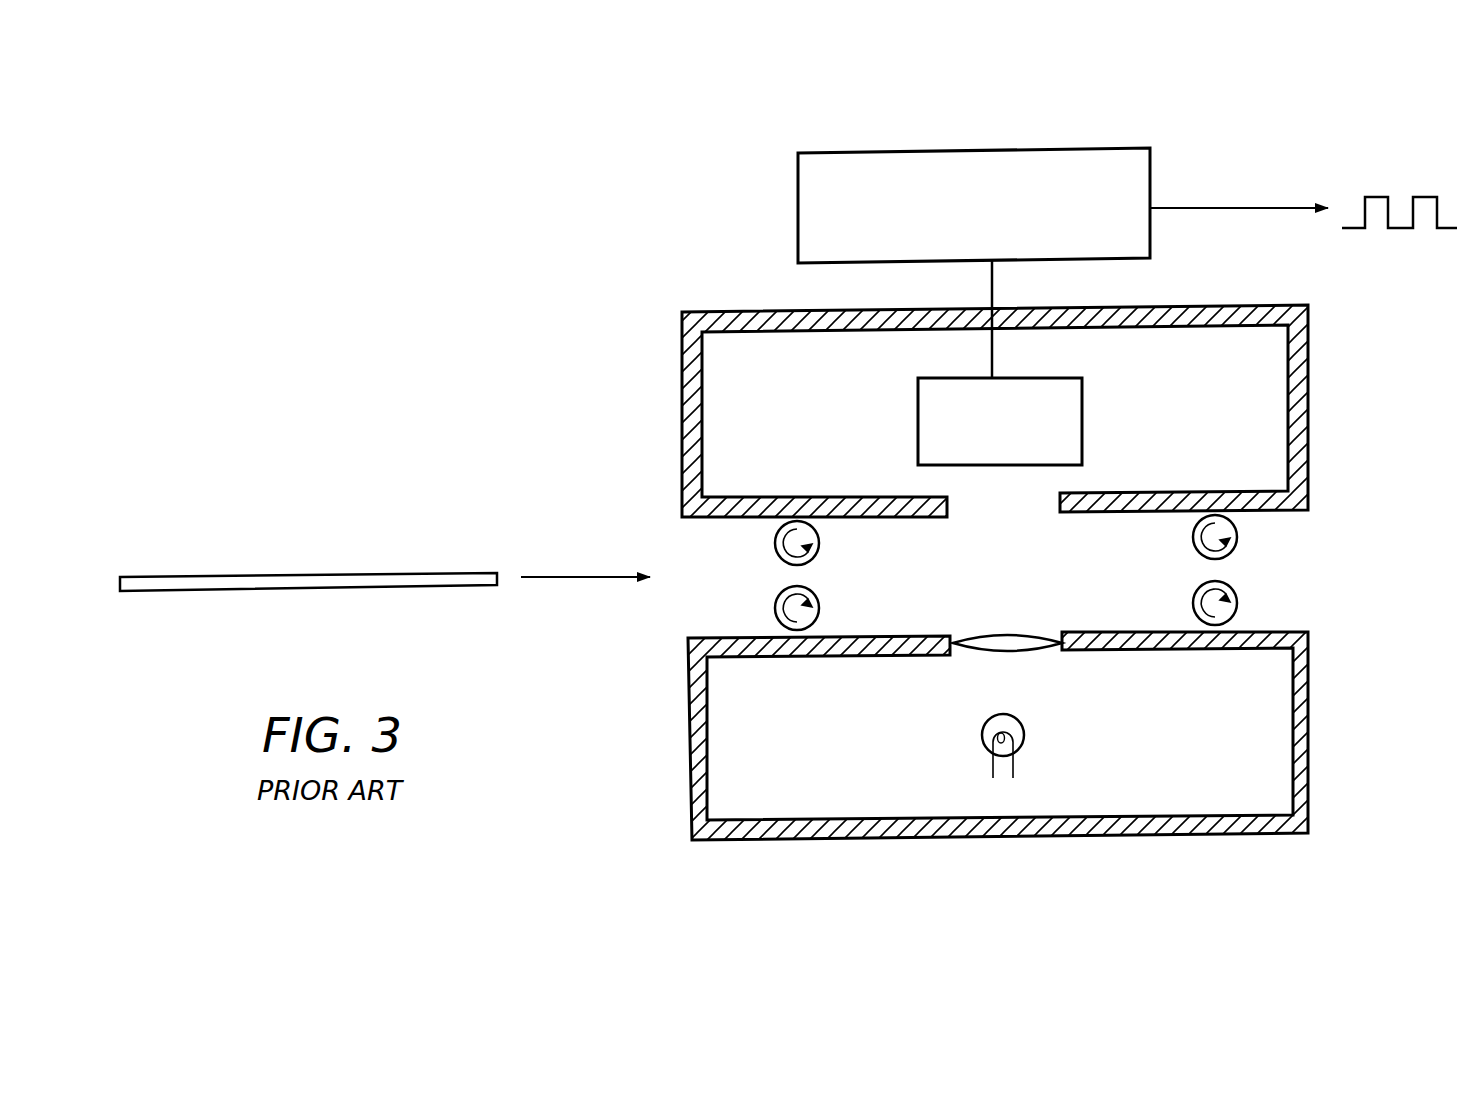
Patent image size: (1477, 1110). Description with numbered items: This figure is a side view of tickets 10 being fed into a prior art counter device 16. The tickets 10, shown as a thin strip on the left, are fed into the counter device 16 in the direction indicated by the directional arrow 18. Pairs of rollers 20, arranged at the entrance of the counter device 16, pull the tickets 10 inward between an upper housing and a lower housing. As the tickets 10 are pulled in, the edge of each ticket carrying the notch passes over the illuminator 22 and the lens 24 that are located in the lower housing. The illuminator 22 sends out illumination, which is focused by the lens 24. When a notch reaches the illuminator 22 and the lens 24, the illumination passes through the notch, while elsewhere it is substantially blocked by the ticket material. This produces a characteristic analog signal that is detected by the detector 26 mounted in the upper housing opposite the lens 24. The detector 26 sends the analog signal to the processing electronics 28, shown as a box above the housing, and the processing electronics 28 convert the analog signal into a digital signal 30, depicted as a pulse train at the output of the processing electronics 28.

The tickets 10 is at (400, 574).
The counter device 16 is at (466, 360).
The directional arrow 18 is at (572, 583).
The rollers 20 is at (820, 546).
The illuminator 22 is at (982, 728).
The lens 24 is at (1013, 631).
The detector 26 is at (918, 381).
The processing electronics 28 is at (798, 196).
The digital signal 30 is at (1408, 144).